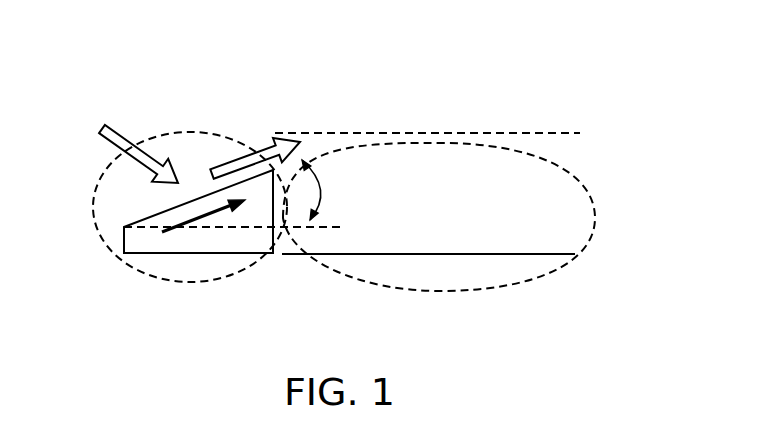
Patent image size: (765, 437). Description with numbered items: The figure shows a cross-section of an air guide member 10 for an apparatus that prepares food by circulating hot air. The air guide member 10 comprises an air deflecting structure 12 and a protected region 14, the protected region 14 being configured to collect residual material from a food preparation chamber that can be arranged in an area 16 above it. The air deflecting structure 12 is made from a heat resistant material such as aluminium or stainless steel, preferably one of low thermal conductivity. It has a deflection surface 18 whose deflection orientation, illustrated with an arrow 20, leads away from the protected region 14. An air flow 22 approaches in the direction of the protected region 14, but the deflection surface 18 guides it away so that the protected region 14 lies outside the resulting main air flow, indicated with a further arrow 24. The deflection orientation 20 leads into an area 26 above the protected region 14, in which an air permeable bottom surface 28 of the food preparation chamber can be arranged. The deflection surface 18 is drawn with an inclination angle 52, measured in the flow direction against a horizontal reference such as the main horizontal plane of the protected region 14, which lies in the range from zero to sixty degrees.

The air guide member 10 is at (204, 55).
The air deflecting structure 12 is at (108, 248).
The protected region 14 is at (365, 283).
The area 16 is at (432, 93).
The deflection surface 18 is at (155, 213).
The deflection orientation 20 is at (192, 220).
The air flow 22 is at (126, 139).
The resulting main air flow 24 is at (262, 148).
The area 26 is at (592, 129).
The air permeable bottom surface 28 is at (526, 133).
The inclination angle 52 is at (328, 190).